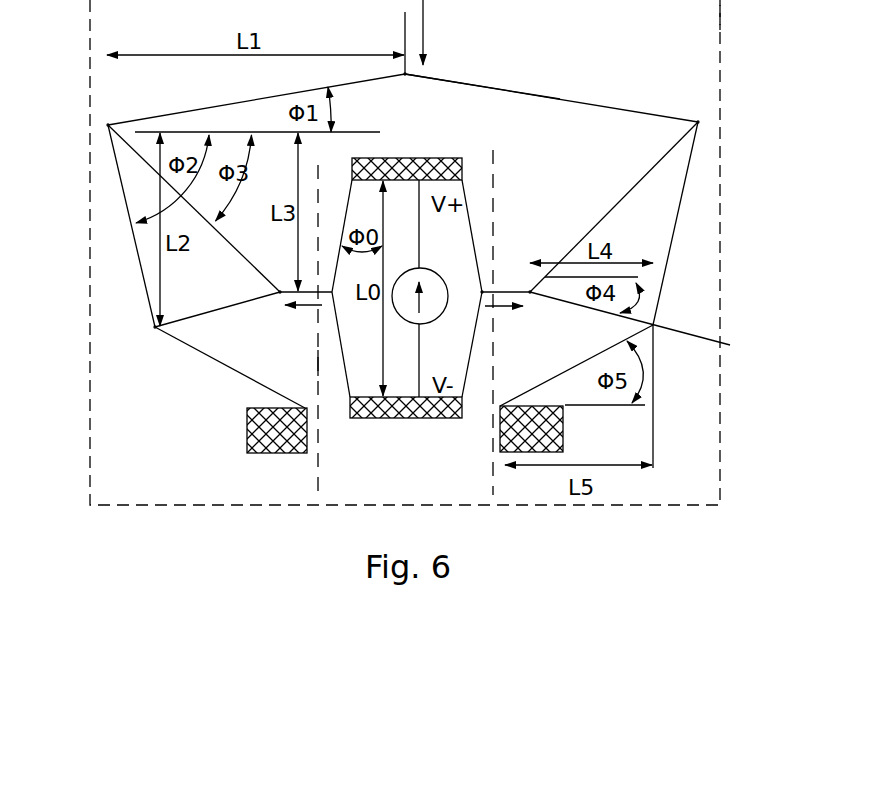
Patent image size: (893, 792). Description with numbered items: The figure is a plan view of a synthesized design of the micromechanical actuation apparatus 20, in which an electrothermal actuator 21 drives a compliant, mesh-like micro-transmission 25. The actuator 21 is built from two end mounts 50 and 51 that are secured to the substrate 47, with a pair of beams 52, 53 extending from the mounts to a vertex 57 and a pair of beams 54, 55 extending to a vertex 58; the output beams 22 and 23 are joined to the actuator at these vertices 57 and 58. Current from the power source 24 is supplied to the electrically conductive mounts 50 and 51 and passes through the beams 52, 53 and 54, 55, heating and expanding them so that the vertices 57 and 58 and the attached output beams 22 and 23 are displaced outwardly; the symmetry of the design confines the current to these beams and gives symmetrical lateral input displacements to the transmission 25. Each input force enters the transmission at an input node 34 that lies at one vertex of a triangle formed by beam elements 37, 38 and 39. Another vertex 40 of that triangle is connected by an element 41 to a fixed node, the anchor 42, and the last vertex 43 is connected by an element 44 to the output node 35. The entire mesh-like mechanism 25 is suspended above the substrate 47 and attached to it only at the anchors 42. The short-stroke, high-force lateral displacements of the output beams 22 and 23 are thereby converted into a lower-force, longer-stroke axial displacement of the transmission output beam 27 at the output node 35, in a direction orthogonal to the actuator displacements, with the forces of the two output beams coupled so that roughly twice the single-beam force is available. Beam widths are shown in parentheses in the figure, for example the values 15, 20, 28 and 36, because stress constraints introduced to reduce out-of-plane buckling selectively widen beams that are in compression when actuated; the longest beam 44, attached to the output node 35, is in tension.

The optical axis / first reference direction 15 is at (482, 84).
The micromechanical actuation apparatus 20 is at (636, 249).
The electrothermal actuator 21 is at (497, 160).
The output beam 22 is at (498, 273).
The output beam 23 is at (280, 285).
The power source 24 is at (408, 268).
The rectilinear transmission system 25 is at (722, 90).
The transmission output beam 27 is at (403, 25).
The lower reference direction 28 is at (568, 352).
The input node 34 is at (275, 297).
The output node 35 is at (392, 93).
The horizontal reference 36 is at (514, 280).
The beam element 37 is at (232, 250).
The beam element 38 is at (137, 247).
The beam element 39 is at (215, 307).
The vertex 40 is at (155, 327).
The element 41 is at (200, 355).
The anchor 42 is at (245, 432).
The vertex 43 is at (108, 125).
The longest beam 44 is at (277, 97).
The substrate 47 is at (695, 26).
The end mount 50 is at (415, 157).
The end mount 51 is at (398, 420).
The beam 52 is at (472, 222).
The beam 53 is at (467, 368).
The beam 54 is at (343, 223).
The beam 55 is at (320, 363).
The vertex 57 is at (482, 295).
The vertex 58 is at (340, 300).